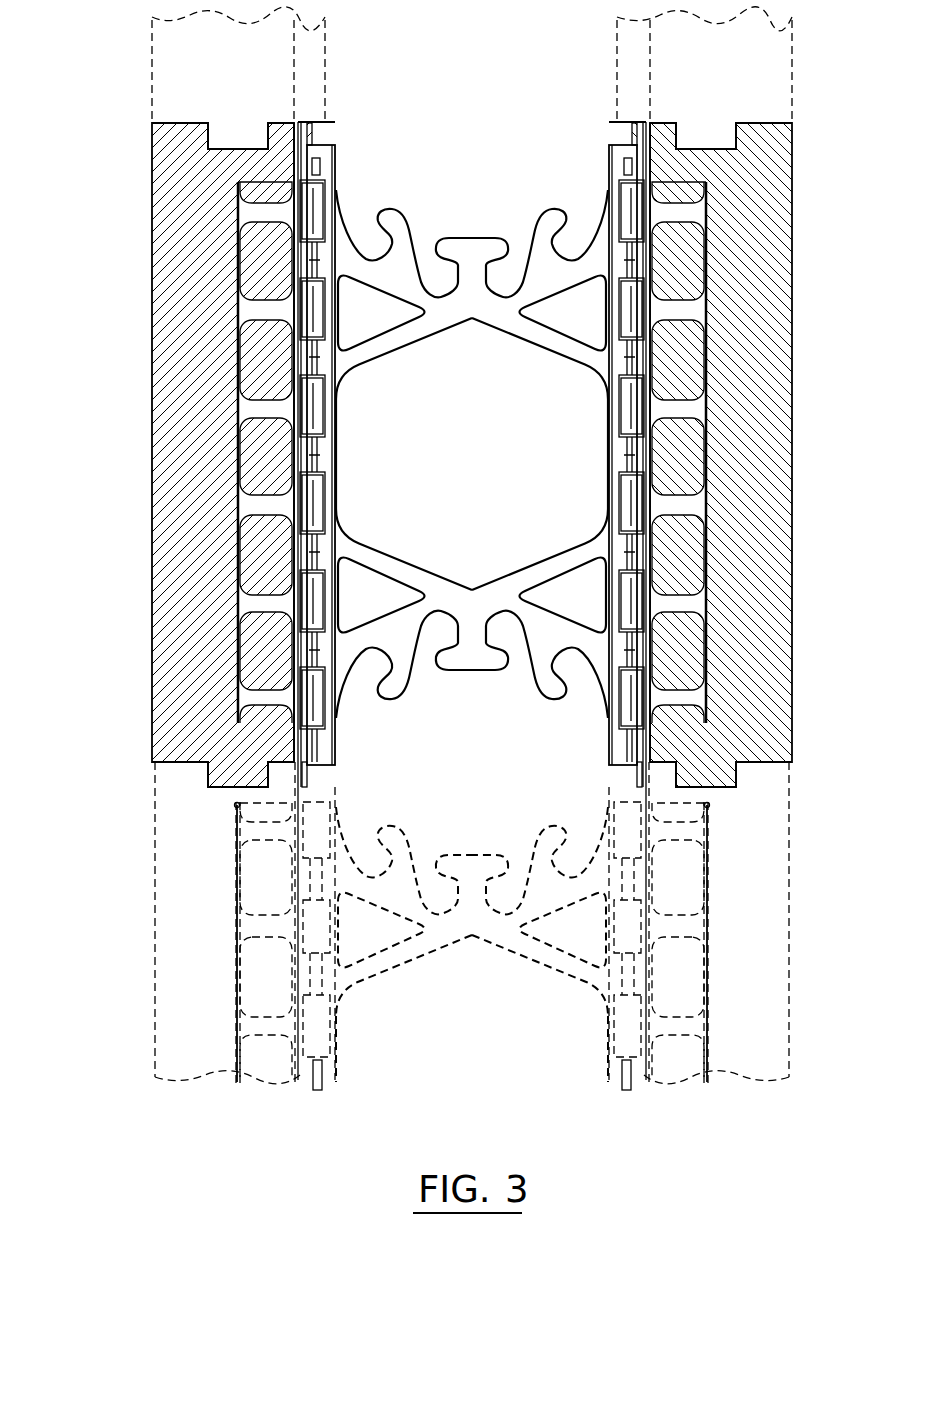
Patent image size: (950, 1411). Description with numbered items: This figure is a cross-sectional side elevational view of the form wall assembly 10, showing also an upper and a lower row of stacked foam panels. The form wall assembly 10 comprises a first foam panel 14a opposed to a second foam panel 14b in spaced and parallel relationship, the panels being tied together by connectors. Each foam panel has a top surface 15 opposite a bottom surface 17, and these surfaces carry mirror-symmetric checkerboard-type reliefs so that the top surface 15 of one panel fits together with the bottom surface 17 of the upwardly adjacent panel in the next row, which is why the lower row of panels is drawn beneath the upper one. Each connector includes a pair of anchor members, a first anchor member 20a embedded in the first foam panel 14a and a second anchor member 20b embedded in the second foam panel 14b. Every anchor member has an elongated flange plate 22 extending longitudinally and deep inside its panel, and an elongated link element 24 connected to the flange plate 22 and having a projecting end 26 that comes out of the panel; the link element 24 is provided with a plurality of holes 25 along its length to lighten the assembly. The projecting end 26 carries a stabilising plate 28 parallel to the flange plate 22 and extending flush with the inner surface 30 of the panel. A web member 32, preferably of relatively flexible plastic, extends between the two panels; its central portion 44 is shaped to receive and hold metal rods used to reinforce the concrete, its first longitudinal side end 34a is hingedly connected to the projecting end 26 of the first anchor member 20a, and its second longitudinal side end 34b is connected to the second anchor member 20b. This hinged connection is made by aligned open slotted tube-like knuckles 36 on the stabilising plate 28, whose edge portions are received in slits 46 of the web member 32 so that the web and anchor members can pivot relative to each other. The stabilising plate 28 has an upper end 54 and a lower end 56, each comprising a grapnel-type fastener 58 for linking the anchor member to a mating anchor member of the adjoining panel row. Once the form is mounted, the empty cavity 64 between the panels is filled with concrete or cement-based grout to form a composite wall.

The form wall assembly 10 is at (492, 86).
The first foam panel 14a is at (148, 62).
The second foam panel 14b is at (796, 62).
The top surface 15 is at (205, 125).
The bottom surface 17 is at (205, 768).
The first anchor member 20a is at (250, 213).
The second anchor member 20b is at (697, 305).
The flange plate 22 is at (250, 357).
The link element 24 is at (250, 308).
The holes 25 is at (244, 480).
The projecting end 26 is at (315, 456).
The stabilising plate 28 is at (338, 540).
The inner surface 30 is at (326, 55).
The web member 32 is at (472, 250).
The first longitudinal side end 34a is at (338, 142).
The second longitudinal side end 34b is at (607, 142).
The tube-like knuckles 36 is at (338, 405).
The central portion 44 is at (473, 660).
The slits 46 is at (326, 205).
The upper end 54 is at (300, 122).
The lower end 56 is at (235, 805).
The fastener 58 is at (306, 130).
The empty cavity 64 is at (457, 453).